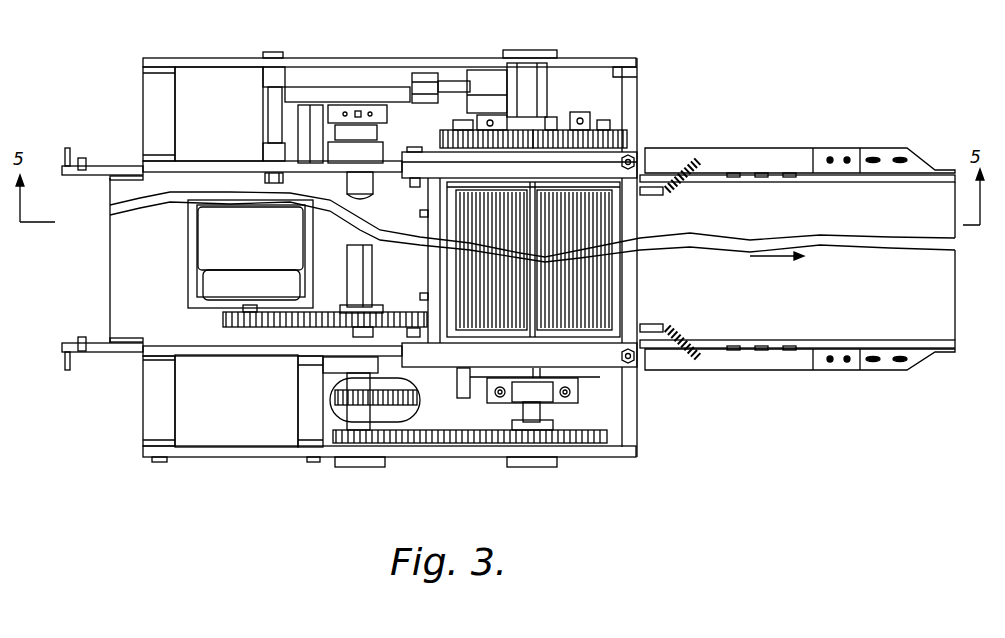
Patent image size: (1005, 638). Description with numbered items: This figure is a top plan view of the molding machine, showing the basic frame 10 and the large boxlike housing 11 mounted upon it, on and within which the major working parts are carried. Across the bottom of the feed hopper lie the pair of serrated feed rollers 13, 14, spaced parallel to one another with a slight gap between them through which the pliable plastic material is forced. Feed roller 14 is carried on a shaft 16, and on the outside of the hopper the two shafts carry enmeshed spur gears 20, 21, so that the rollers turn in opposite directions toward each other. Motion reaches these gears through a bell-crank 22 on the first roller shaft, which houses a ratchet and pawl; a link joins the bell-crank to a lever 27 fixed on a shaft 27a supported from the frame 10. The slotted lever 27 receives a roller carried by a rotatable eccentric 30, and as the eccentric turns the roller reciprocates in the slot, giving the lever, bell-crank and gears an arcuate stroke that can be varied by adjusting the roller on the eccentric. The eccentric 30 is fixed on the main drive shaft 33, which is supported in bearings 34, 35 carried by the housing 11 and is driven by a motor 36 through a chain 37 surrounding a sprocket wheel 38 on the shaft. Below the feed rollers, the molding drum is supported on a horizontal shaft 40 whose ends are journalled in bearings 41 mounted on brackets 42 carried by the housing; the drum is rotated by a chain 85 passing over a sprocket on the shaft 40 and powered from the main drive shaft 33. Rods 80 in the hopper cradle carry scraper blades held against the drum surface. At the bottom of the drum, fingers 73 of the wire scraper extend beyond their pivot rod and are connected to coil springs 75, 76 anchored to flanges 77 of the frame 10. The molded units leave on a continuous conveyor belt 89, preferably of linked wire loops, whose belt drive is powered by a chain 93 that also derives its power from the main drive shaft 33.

The basic frame 10 is at (223, 452).
The boxlike housing 11 is at (222, 165).
The serrated feed roller 13 is at (458, 265).
The serrated feed roller 14 is at (607, 292).
The shaft 16 is at (580, 112).
The spur gear 20 is at (440, 136).
The spur gear 21 is at (625, 138).
The bell-crank 22 is at (452, 85).
The lever 27 is at (347, 92).
The shaft 27a is at (290, 40).
The rotatable eccentric 30 is at (335, 122).
The main drive shaft 33 is at (350, 276).
The bearing 34 is at (340, 155).
The bearing 35 is at (337, 365).
The motor 36 is at (203, 244).
The chain 37 is at (300, 327).
The sprocket wheel 38 is at (377, 305).
The shaft 40 is at (543, 410).
The bearing 41 is at (517, 395).
The bracket 42 is at (463, 398).
The finger 73 is at (650, 195).
The coil spring 75 is at (684, 333).
The coil spring 76 is at (686, 182).
The flange 77 is at (753, 153).
The rod 80 is at (420, 213).
The chain 85 is at (445, 443).
The conveyor belt 89 is at (120, 272).
The chain 93 is at (417, 395).